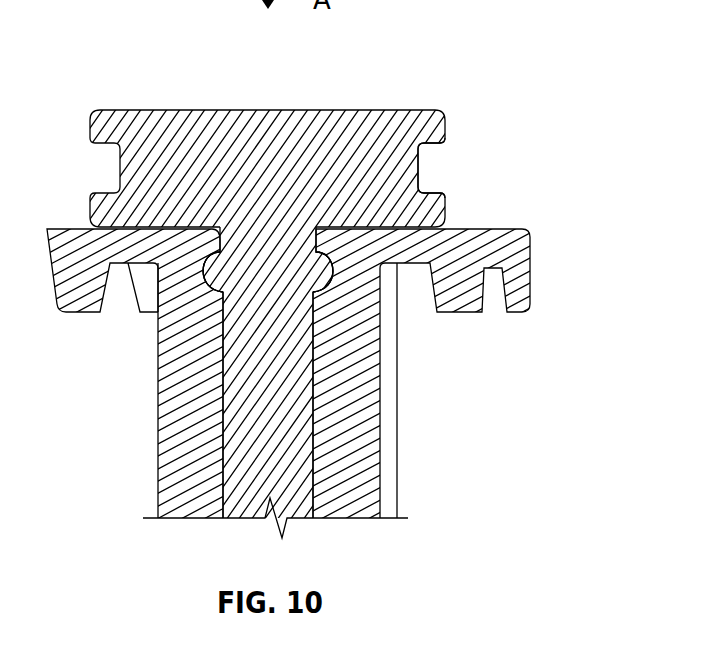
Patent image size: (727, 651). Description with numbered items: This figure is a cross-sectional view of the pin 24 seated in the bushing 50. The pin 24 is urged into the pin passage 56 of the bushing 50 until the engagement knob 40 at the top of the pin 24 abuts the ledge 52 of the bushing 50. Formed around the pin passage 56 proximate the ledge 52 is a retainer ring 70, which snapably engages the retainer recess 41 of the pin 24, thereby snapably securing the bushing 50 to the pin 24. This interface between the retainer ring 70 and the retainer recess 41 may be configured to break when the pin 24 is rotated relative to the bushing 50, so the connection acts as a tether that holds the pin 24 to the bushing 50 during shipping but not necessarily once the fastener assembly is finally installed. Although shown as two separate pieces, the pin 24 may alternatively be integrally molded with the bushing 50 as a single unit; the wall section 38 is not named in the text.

The engagement knob 40 is at (397, 111).
The pin 24 is at (394, 176).
The retainer ring 70 is at (207, 240).
The retainer recess 41 is at (223, 273).
The ledge 52 is at (88, 226).
The bushing 50 is at (507, 230).
The pin passage 56 is at (203, 395).
The second leg 38 is at (307, 463).